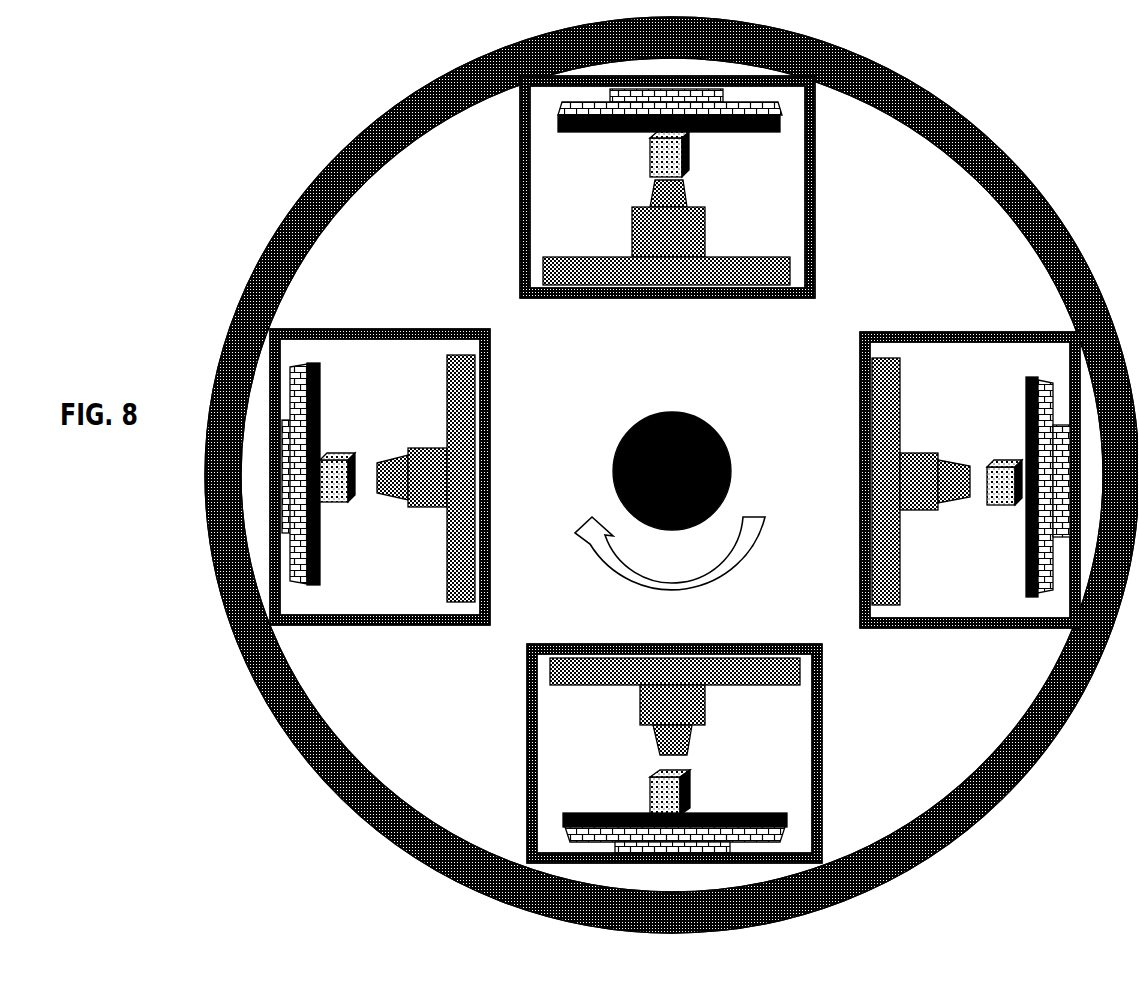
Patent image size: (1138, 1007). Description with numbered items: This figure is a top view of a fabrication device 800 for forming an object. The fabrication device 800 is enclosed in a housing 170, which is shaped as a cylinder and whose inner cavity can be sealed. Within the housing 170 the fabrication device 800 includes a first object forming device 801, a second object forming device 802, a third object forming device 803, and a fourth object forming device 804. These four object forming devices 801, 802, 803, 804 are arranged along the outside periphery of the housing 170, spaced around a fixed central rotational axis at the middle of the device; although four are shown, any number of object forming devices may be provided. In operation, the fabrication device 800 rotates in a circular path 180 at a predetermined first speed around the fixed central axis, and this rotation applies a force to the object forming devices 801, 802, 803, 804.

The fabrication device 800 is at (310, 115).
The housing 170 is at (289, 213).
The circular path 180 is at (670, 501).
The first object forming device 801 is at (347, 323).
The second object forming device 802 is at (978, 321).
The third object forming device 803 is at (498, 205).
The fourth object forming device 804 is at (575, 615).